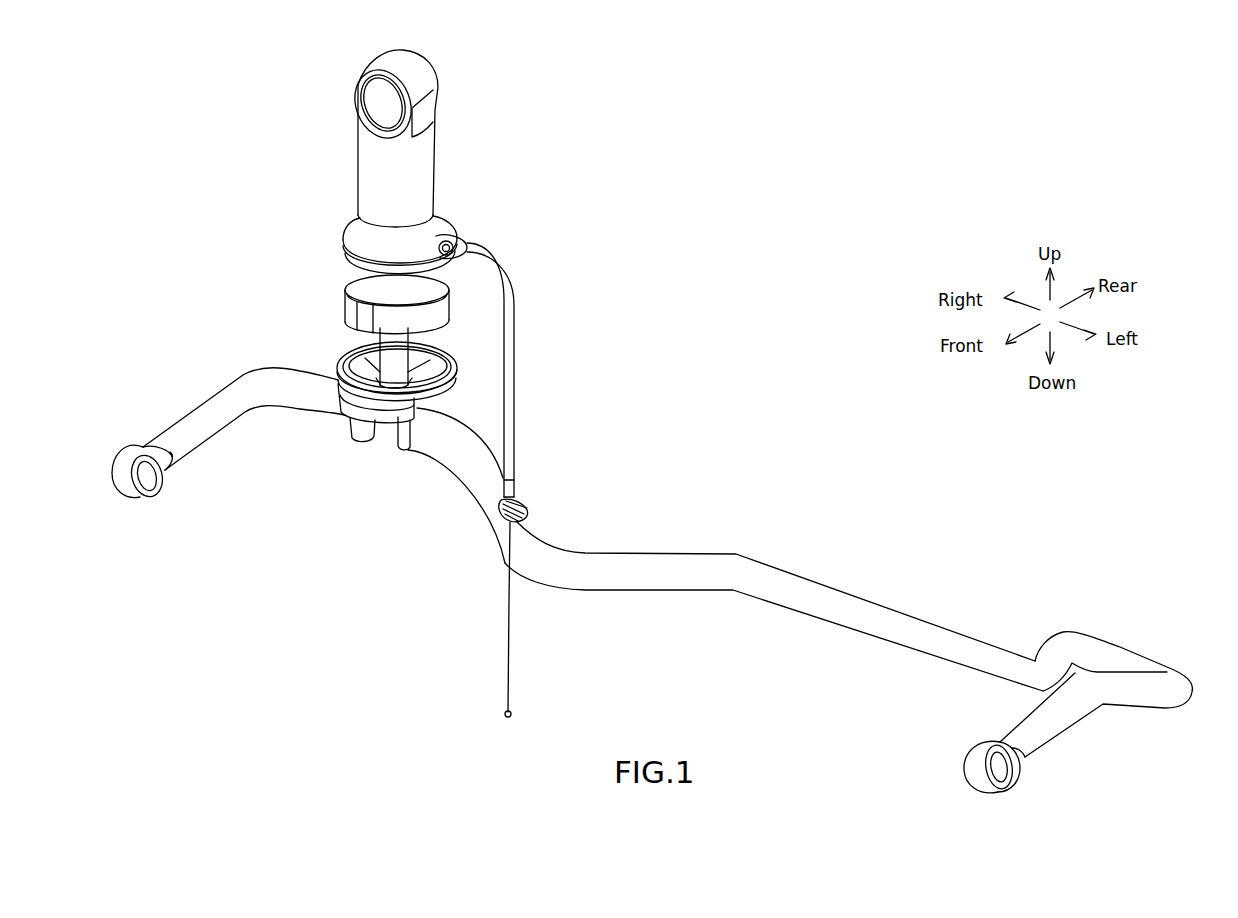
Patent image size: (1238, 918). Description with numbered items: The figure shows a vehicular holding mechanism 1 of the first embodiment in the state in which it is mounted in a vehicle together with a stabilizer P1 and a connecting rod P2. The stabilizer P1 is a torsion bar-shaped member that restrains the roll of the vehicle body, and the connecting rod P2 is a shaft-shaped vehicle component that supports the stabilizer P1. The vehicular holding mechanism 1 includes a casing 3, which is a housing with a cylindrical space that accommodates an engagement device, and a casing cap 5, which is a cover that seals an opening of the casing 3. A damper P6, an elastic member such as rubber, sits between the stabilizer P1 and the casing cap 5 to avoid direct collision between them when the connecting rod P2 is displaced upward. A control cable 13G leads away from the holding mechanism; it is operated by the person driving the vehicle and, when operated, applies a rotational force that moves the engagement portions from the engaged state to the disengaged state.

The vehicular holding mechanism 1 is at (464, 200).
The casing 3 is at (372, 170).
The casing cap 5 is at (347, 310).
The connecting rod P2 is at (408, 343).
The damper P6 is at (348, 356).
The control cable 13G is at (516, 378).
The stabilizer P1 is at (779, 578).